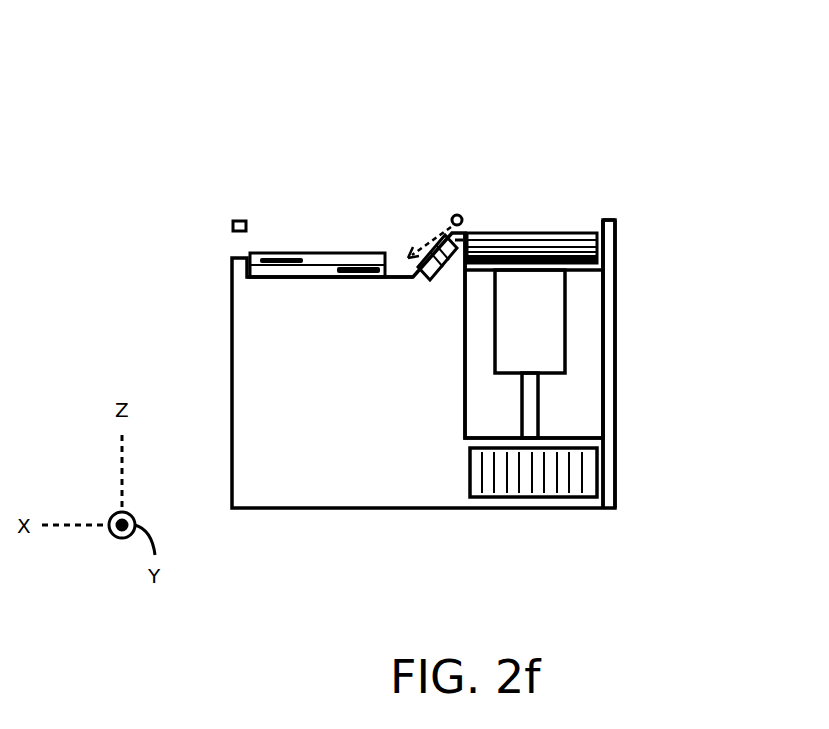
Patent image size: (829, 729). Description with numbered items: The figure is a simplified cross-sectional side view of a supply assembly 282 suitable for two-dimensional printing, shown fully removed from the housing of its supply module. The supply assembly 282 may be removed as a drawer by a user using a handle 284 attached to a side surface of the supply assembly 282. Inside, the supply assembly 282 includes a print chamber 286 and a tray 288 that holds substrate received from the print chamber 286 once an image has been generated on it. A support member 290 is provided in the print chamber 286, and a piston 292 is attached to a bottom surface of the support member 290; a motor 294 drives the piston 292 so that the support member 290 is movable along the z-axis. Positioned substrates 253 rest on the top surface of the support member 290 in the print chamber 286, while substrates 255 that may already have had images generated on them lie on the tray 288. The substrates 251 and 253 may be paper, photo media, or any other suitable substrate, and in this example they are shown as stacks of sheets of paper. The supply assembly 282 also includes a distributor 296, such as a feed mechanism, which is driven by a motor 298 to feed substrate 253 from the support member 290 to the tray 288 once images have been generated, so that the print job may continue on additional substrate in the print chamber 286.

The supply assembly 282 is at (440, 85).
The handle 284 is at (230, 318).
The print chamber 286 is at (492, 223).
The tray 288 is at (310, 280).
The support member 290 is at (602, 260).
The piston 292 is at (565, 327).
The motor 294 is at (530, 497).
The distributor 296 is at (455, 214).
The motor 298 is at (422, 283).
The substrates 251 is at (265, 253).
The substrates 253 is at (560, 230).
The substrates 255 is at (320, 253).